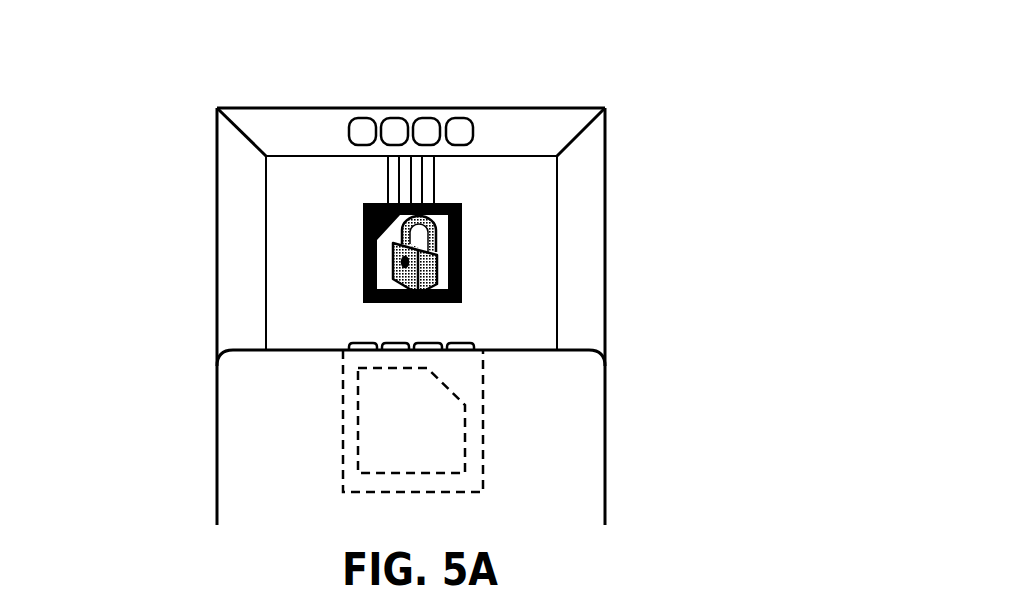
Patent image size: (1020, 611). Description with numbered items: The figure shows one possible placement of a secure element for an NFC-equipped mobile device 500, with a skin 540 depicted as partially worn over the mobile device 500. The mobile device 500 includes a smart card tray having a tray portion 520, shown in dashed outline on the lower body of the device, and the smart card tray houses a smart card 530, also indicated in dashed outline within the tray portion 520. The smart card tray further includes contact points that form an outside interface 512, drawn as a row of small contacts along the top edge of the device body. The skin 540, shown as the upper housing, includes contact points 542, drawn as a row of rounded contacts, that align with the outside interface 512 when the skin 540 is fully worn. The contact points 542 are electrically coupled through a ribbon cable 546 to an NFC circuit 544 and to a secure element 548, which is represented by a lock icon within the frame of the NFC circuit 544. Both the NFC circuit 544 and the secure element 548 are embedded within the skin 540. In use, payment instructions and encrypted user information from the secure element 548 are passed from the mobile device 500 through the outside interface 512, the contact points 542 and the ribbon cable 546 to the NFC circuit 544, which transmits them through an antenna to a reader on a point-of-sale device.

The mobile device 500 is at (213, 463).
The outside interface 512 is at (470, 341).
The tray portion 520 is at (481, 482).
The smart card 530 is at (430, 420).
The skin 540 is at (213, 260).
The contact points 542 is at (390, 128).
The NFC circuit 544 is at (462, 226).
The ribbon cable 546 is at (437, 173).
The secure element 548 is at (432, 270).